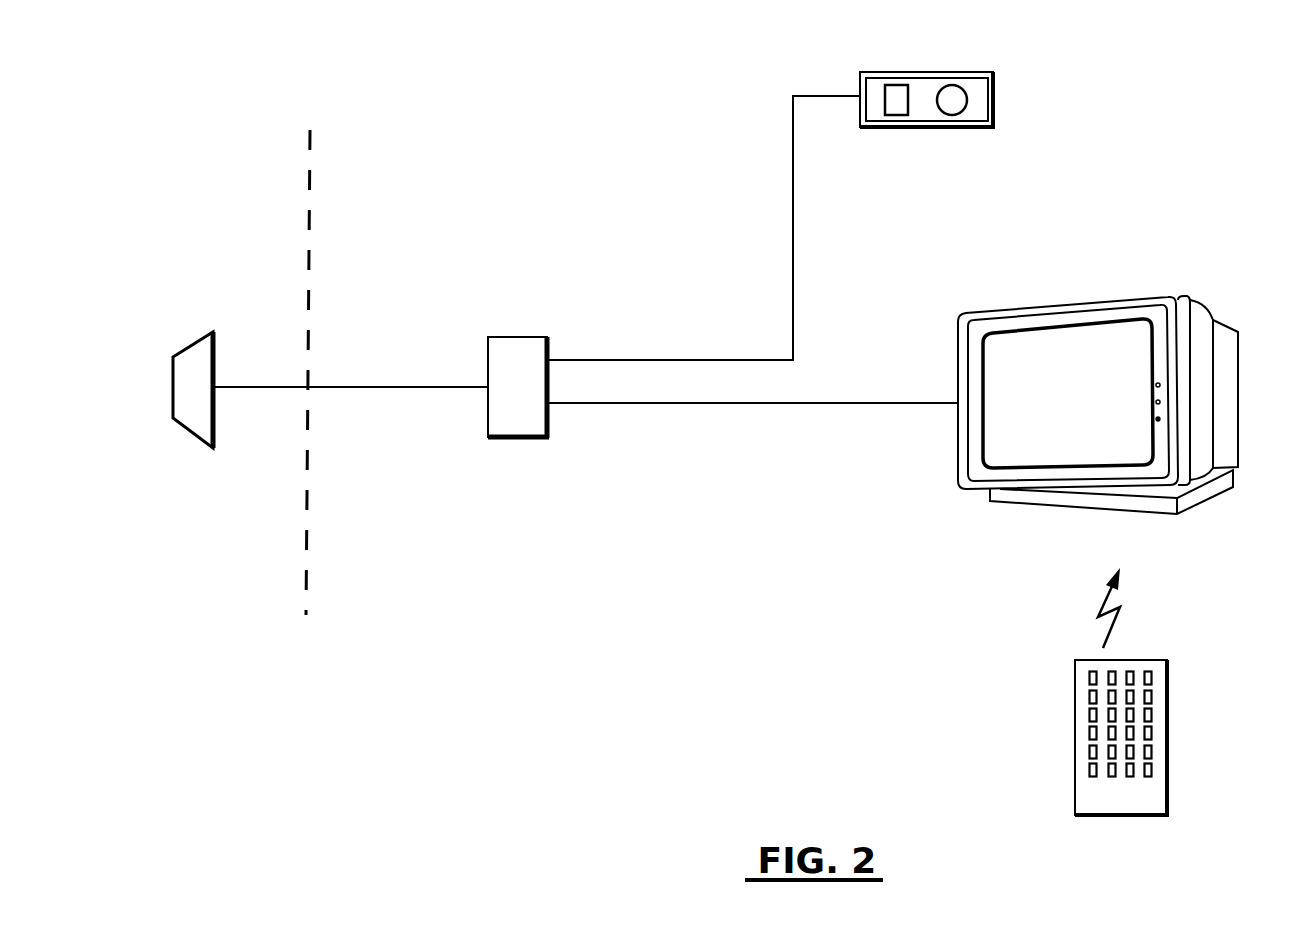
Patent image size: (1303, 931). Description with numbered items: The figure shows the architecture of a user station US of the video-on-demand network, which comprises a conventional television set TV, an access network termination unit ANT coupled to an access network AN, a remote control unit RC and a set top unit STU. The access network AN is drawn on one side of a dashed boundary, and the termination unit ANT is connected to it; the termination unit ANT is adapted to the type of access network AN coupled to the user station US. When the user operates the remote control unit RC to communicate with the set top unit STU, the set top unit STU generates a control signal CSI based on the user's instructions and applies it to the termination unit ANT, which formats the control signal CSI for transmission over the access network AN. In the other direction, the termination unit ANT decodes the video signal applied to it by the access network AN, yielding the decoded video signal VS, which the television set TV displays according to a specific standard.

The access network AN is at (192, 330).
The access network termination unit ANT is at (514, 325).
The control signal CSI is at (641, 348).
The decoded video signal VS is at (644, 418).
The set top unit STU is at (927, 75).
The television set TV is at (1098, 384).
The remote control unit RC is at (1178, 689).
The user station US is at (569, 475).